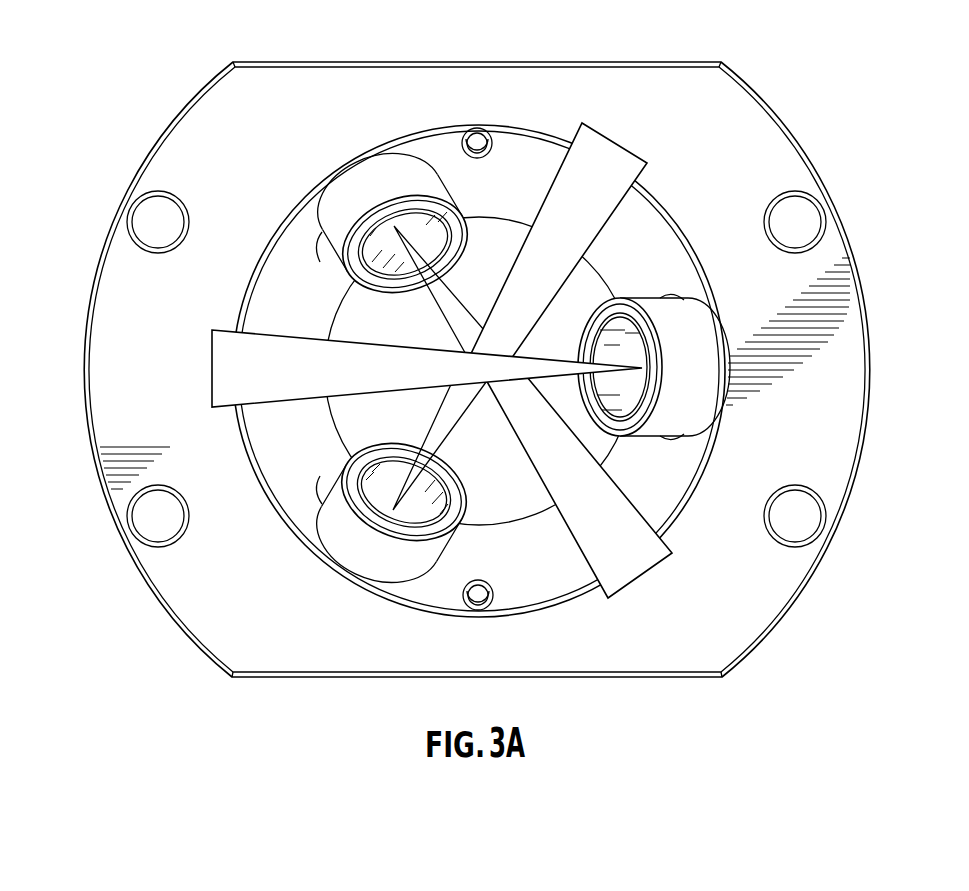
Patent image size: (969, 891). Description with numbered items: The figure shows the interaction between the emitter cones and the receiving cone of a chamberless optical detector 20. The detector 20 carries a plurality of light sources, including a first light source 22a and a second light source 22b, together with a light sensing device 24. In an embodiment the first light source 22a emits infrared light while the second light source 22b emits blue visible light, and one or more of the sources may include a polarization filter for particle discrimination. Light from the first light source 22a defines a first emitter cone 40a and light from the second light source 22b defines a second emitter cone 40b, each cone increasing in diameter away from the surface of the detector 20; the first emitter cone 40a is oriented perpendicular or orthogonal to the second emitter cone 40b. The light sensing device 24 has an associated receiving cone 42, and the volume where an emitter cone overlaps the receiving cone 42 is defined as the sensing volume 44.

The detector 20 is at (150, 300).
The first light source 22a is at (360, 547).
The second light source 22b is at (380, 185).
The light sensing device 24 is at (667, 322).
The first emitter cone 40a is at (603, 153).
The second emitter cone 40b is at (588, 552).
The receiving cone 42 is at (220, 393).
The sensing volume 44 is at (483, 365).